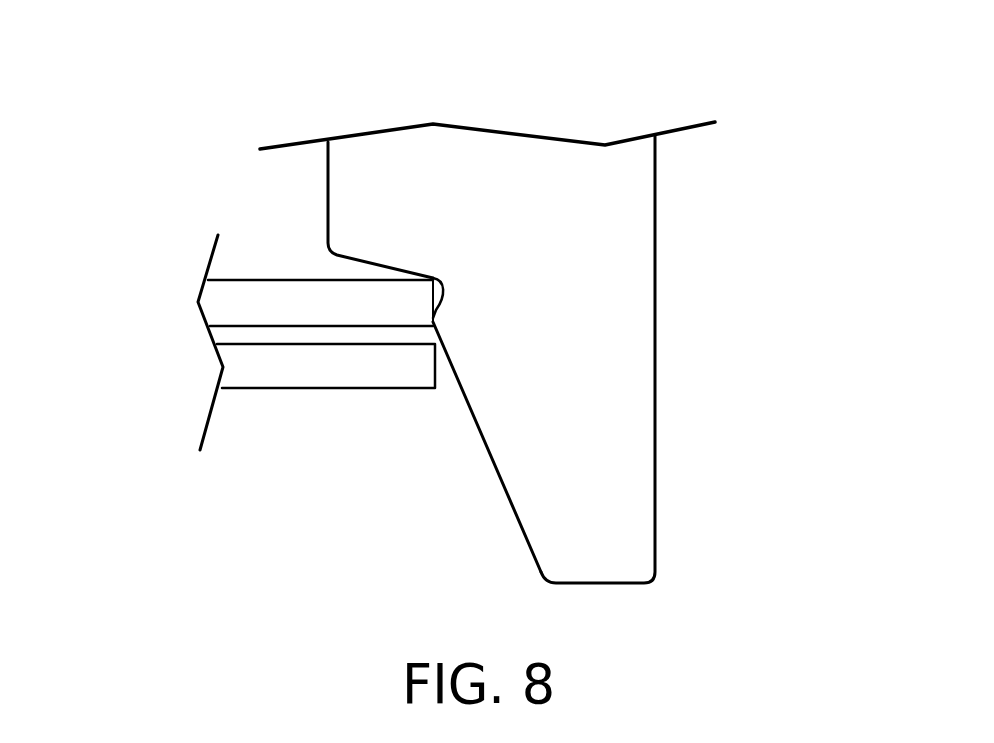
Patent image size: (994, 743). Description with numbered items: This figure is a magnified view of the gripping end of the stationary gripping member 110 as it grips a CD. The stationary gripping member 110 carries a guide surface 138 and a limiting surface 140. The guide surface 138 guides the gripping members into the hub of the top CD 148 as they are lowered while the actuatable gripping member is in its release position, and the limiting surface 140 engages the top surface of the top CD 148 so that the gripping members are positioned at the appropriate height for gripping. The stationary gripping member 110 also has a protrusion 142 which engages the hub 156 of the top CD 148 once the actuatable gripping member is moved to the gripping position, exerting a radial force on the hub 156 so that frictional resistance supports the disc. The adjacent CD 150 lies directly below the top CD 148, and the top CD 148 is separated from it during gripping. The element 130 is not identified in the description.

The stationary gripping member 110 is at (670, 90).
The body panel 130 is at (610, 358).
The guide surface 138 is at (493, 462).
The limiting surface 140 is at (356, 258).
The protrusion 142 is at (435, 320).
The top CD 148 is at (228, 296).
The adjacent CD 150 is at (268, 368).
The hub 156 is at (437, 278).